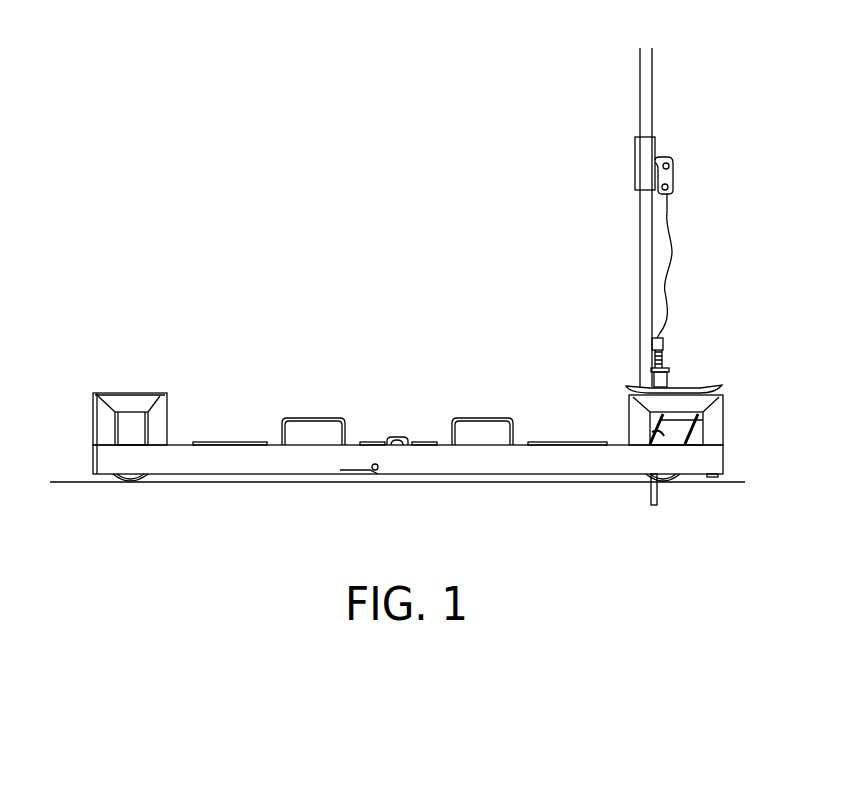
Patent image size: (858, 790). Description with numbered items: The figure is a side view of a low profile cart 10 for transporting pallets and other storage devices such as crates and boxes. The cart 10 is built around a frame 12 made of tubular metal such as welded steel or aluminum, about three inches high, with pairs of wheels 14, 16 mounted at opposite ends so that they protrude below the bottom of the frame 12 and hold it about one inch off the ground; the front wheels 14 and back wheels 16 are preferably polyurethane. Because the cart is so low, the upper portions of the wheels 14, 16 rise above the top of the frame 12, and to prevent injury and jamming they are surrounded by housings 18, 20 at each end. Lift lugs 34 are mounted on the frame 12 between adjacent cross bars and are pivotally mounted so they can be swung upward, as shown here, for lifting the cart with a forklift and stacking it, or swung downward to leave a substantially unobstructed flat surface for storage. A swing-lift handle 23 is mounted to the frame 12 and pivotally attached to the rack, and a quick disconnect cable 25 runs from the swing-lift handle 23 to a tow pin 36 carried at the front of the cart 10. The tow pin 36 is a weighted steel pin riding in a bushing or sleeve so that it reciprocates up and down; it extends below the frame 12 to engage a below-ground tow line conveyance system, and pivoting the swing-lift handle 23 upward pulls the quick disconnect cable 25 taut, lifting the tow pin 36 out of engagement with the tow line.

The cart 10 is at (190, 275).
The frame 12 is at (541, 460).
The front wheels 14 is at (676, 485).
The back wheels 16 is at (133, 485).
The housing 18 is at (718, 413).
The housing 20 is at (133, 393).
The swing-lift handle 23 is at (675, 180).
The quick disconnect cable 25 is at (676, 255).
The lift lugs 34 is at (318, 418).
The tow pin 36 is at (650, 497).